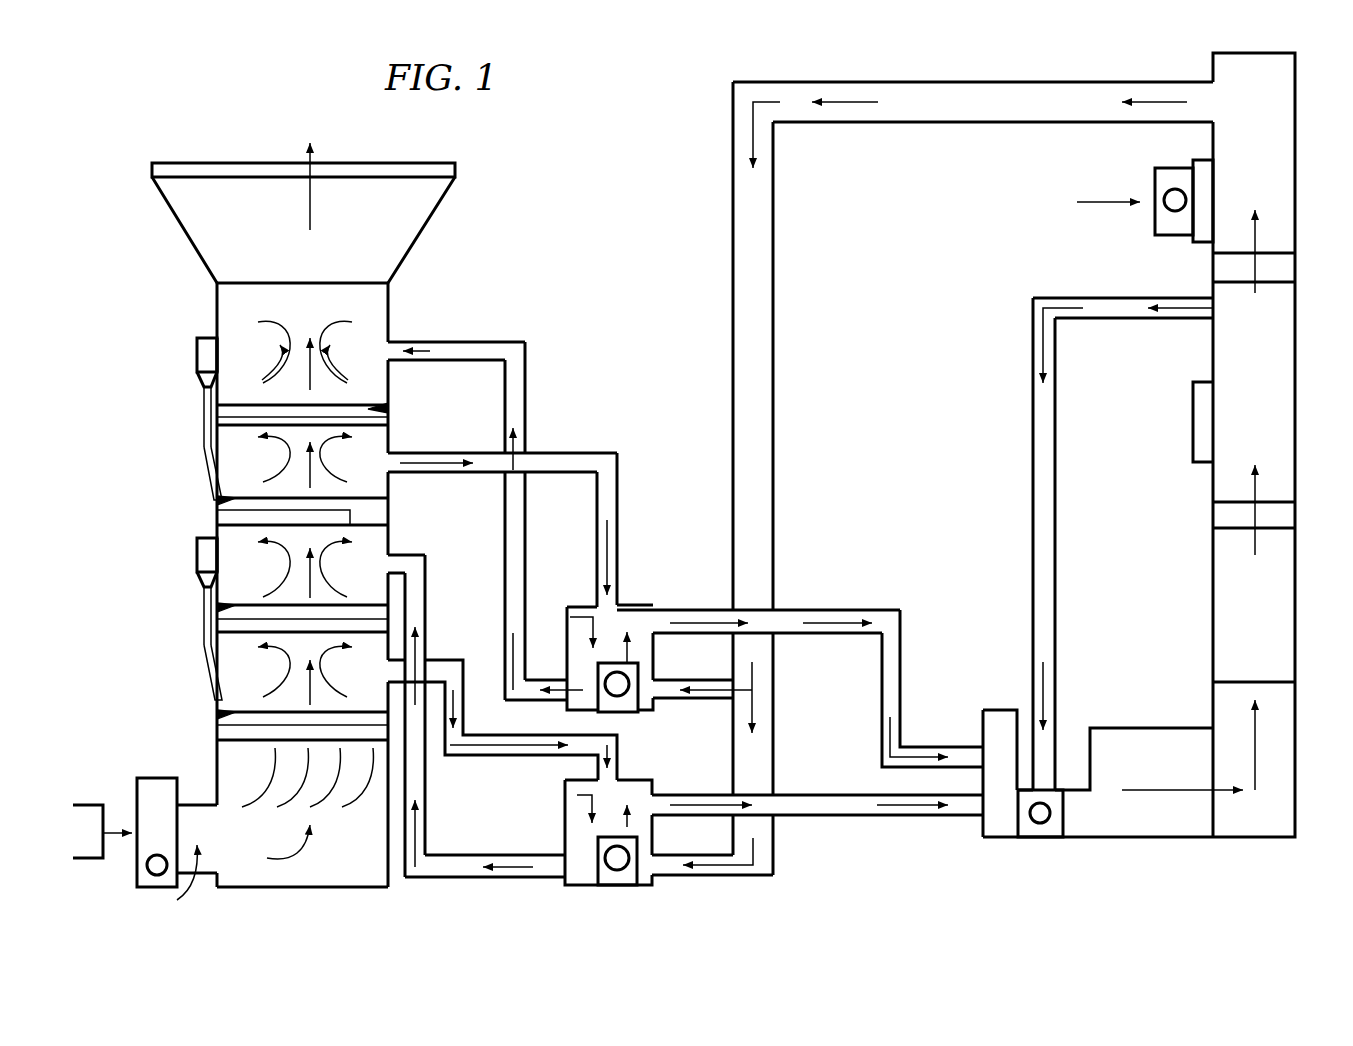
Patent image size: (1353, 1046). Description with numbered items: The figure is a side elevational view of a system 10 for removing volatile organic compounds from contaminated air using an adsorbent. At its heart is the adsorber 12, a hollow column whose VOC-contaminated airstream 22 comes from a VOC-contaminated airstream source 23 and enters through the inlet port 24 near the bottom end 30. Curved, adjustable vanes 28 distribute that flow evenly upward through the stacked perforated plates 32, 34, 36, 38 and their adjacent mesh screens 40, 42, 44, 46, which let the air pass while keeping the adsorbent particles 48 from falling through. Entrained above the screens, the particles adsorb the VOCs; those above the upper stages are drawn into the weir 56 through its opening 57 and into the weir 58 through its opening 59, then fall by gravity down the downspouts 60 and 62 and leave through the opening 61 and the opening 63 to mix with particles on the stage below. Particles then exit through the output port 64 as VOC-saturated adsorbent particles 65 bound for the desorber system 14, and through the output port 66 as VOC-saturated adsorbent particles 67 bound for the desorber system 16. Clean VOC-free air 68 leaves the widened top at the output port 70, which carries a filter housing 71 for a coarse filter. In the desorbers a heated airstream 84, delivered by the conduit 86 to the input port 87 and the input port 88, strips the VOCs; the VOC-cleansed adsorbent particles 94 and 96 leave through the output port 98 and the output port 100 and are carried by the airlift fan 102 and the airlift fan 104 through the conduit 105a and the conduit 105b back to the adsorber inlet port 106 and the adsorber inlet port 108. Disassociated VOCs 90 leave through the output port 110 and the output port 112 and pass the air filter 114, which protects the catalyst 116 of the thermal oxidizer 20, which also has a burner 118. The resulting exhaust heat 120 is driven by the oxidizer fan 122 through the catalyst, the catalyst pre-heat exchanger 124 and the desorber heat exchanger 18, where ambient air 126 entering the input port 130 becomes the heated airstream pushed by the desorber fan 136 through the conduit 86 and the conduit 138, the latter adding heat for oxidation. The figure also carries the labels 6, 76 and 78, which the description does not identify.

The burner 6 is at (150, 778).
The system 10 is at (612, 165).
The adsorber 12 is at (390, 300).
The desorber system 14 is at (582, 597).
The desorber system 16 is at (560, 792).
The desorber heat exchanger 18 is at (1282, 123).
The thermal oxidizer 20 is at (1297, 452).
The VOC-contaminated airstream 22 is at (303, 858).
The VOC-contaminated airstream source 23 is at (78, 862).
The inlet port 24 is at (170, 882).
The vanes 28 is at (280, 805).
The bottom end 30 is at (287, 888).
The perforated plate 32 is at (375, 423).
The perforated plate 34 is at (372, 513).
The perforated plate 36 is at (227, 622).
The perforated plate 38 is at (223, 730).
The mesh screen 40 is at (378, 410).
The mesh screen 42 is at (215, 510).
The mesh screen 44 is at (228, 612).
The mesh screen 46 is at (223, 722).
The adsorbent particles 48 is at (310, 513).
The weir 56 is at (197, 355).
The opening 57 is at (222, 350).
The weir 58 is at (197, 560).
The opening 59 is at (222, 575).
The downspouts 60 is at (215, 470).
The opening 61 is at (225, 464).
The downspouts 62 is at (220, 653).
The opening 63 is at (224, 672).
The output port 64 is at (395, 470).
The VOC-saturated adsorbent particles 65 is at (483, 474).
The output port 66 is at (396, 678).
The VOC-saturated adsorbent particles 67 is at (438, 668).
The VOC-free air 68 is at (312, 153).
The output port 70 is at (393, 160).
The filter housing 71 is at (440, 168).
The duct inlet 76 is at (614, 602).
The duct inlet 78 is at (612, 777).
The heated airstream 84 is at (1167, 102).
The conduit 86 is at (1005, 80).
The input port 87 is at (657, 682).
The input port 88 is at (655, 857).
The disassociated VOCs 90 is at (915, 757).
The VOC-cleansed adsorbent particles 94 is at (535, 692).
The VOC-cleansed adsorbent particles 96 is at (533, 868).
The output port 98 is at (573, 678).
The output port 100 is at (572, 852).
The airlift fan 102 is at (618, 706).
The airlift fan 104 is at (625, 882).
The conduit 105a is at (527, 375).
The conduit 105b is at (452, 878).
The adsorber inlet port 106 is at (393, 342).
The adsorber inlet port 108 is at (394, 556).
The output port 110 is at (656, 621).
The output port 112 is at (656, 797).
The air filter 114 is at (1000, 840).
The catalyst 116 is at (1297, 598).
The burner 118 is at (1163, 820).
The exhaust heat 120 is at (1167, 788).
The oxidizer fan 122 is at (1038, 832).
The catalyst pre-heat exchanger 124 is at (1297, 348).
The ambient air 126 is at (1108, 200).
The input port 130 is at (1228, 235).
The desorber fan 136 is at (1162, 220).
The conduit 138 is at (1032, 348).